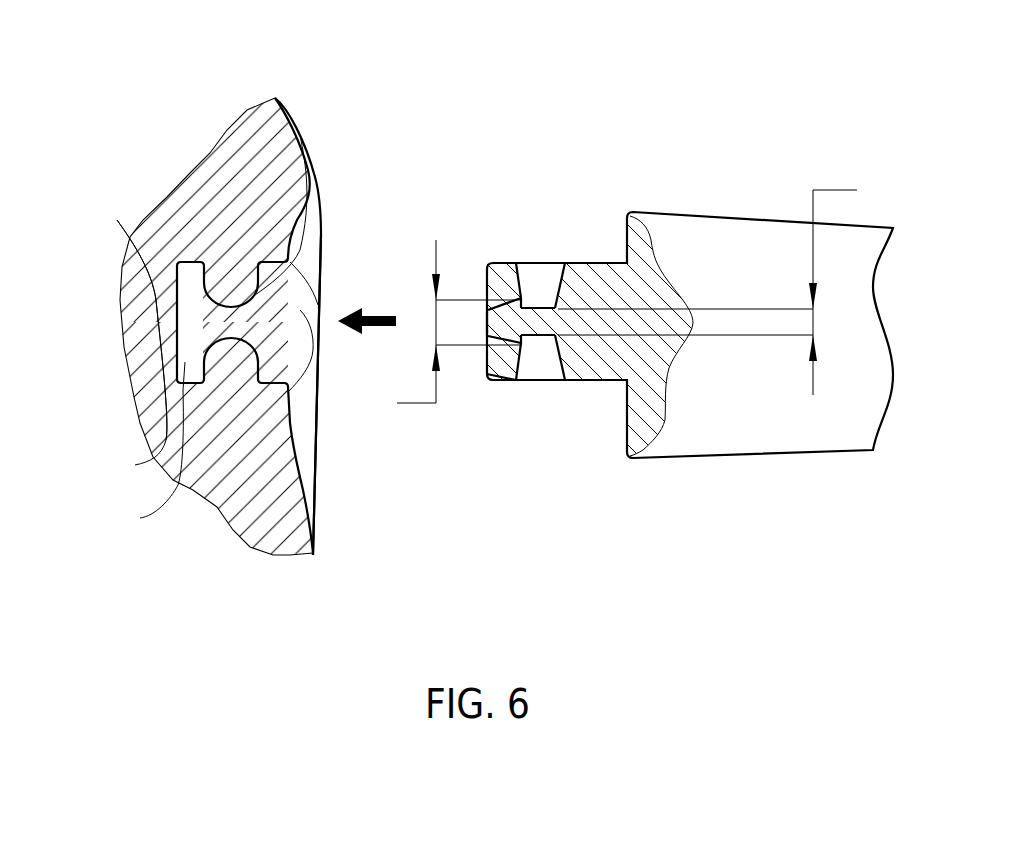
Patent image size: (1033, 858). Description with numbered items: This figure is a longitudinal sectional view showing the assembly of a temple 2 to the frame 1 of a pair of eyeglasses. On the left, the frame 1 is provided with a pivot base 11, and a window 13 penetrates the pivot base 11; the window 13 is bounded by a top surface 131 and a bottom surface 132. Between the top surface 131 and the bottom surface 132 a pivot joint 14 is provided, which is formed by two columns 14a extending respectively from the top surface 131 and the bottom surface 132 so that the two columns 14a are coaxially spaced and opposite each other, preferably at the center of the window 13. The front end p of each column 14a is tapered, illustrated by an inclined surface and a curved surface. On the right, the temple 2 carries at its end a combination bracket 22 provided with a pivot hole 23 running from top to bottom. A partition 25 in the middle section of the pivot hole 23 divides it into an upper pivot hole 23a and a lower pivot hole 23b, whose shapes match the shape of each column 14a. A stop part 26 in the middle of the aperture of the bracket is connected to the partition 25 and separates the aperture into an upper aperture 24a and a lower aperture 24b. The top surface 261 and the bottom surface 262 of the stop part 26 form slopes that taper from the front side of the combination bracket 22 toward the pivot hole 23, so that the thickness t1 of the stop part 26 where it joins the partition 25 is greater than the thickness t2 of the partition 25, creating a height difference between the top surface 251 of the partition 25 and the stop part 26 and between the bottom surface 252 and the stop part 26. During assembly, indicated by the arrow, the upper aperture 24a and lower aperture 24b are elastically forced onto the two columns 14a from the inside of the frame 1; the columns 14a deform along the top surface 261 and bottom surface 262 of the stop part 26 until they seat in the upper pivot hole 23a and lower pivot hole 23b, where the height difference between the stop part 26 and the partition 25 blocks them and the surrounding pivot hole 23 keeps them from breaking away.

The frame 1 is at (255, 133).
The pivot base 11 is at (240, 233).
The window 13 is at (190, 273).
The top surface 131 is at (288, 130).
The bottom surface 132 is at (288, 390).
The front end p is at (322, 257).
The pivot joint 14 is at (72, 450).
The column 14a is at (134, 379).
The temple 2 is at (728, 240).
The combination bracket 22 is at (600, 293).
The pivot hole 23 is at (675, 487).
The upper pivot hole 23a is at (553, 290).
The lower pivot hole 23b is at (549, 360).
The upper aperture 24a is at (508, 275).
The lower aperture 24b is at (512, 358).
The partition 25 is at (533, 322).
The top surface 251 is at (541, 305).
The bottom surface 252 is at (535, 352).
The stop part 26 is at (486, 325).
The top surface 261 is at (503, 302).
The bottom surface 262 is at (498, 337).
The thickness t1 is at (459, 322).
The thickness t2 is at (707, 272).